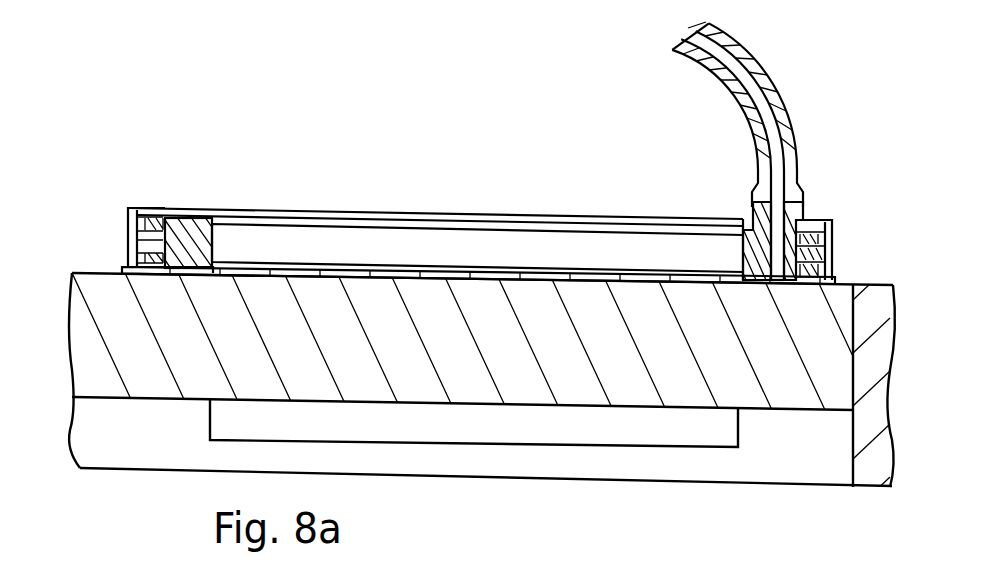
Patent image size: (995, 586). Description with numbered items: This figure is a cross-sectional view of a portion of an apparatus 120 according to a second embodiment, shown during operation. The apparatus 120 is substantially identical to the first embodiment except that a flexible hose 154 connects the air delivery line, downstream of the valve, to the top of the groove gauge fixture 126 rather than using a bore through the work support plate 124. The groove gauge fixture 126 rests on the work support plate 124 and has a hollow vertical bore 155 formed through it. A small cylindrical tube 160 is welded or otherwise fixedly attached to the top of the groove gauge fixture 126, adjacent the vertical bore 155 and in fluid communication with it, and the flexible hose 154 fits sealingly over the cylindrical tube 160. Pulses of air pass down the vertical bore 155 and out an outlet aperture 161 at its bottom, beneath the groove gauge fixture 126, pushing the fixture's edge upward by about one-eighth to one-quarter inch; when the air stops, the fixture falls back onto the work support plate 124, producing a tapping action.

The apparatus 120 is at (458, 97).
The work support plate 124 is at (102, 273).
The groove gauge fixture 126 is at (180, 216).
The flexible hose 154 is at (764, 77).
The vertical bore 155 is at (781, 282).
The cylindrical tube 160 is at (752, 210).
The outlet aperture 161 is at (768, 278).